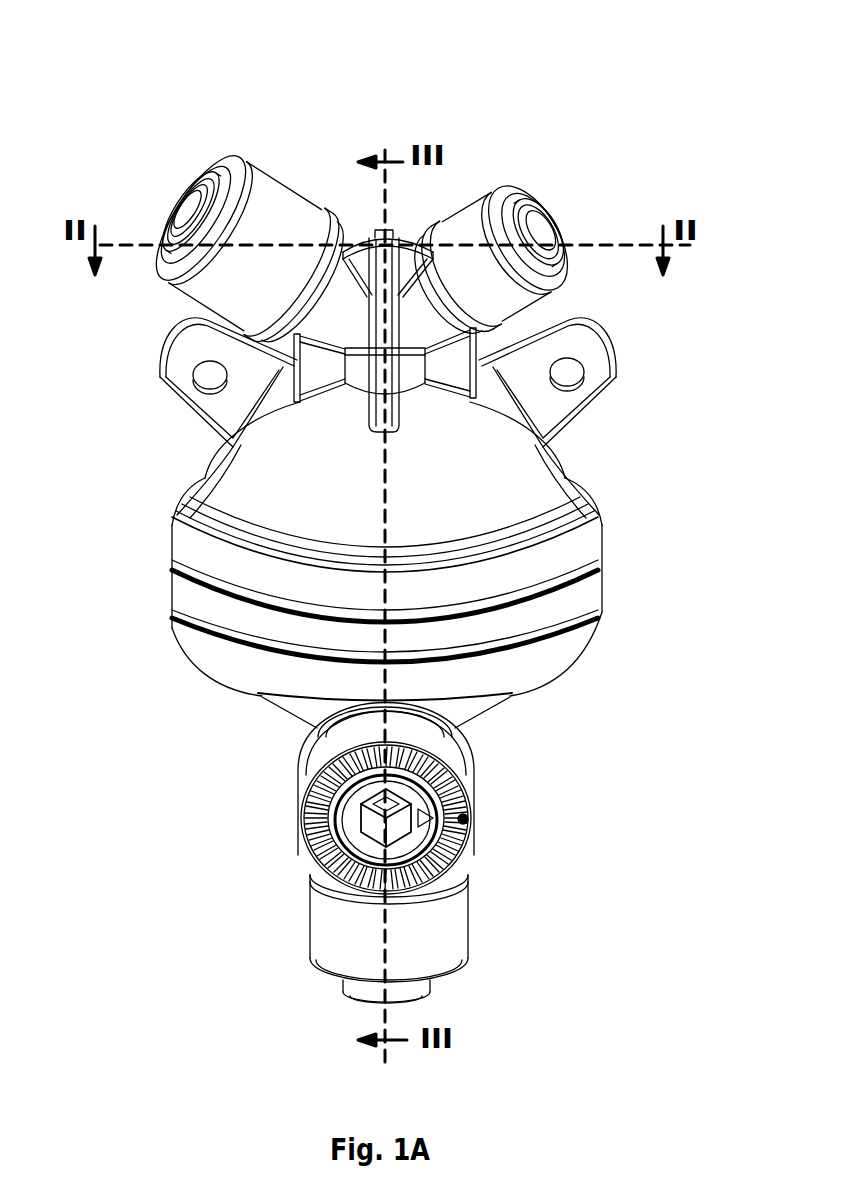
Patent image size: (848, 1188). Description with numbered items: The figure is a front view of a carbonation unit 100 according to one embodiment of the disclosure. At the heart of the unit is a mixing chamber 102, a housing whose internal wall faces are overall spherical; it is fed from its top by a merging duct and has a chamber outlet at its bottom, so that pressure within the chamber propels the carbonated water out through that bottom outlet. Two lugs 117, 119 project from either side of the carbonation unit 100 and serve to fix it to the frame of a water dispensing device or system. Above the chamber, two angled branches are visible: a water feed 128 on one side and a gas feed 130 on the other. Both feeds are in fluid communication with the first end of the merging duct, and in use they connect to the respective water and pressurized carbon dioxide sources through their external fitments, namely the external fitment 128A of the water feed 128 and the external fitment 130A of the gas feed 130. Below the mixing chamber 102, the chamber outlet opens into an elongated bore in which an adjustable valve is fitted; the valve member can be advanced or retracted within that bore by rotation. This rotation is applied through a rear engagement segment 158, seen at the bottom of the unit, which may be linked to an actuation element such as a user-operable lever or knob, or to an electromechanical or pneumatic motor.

The carbonation unit 100 is at (737, 102).
The mixing chamber 102 is at (527, 480).
The lug 117 is at (590, 388).
The lug 119 is at (185, 375).
The water feed 128 is at (262, 197).
The external fitment 128A is at (203, 192).
The gas feed 130 is at (480, 210).
The external fitment 130A is at (550, 230).
The rear engagement segment 158 is at (368, 799).